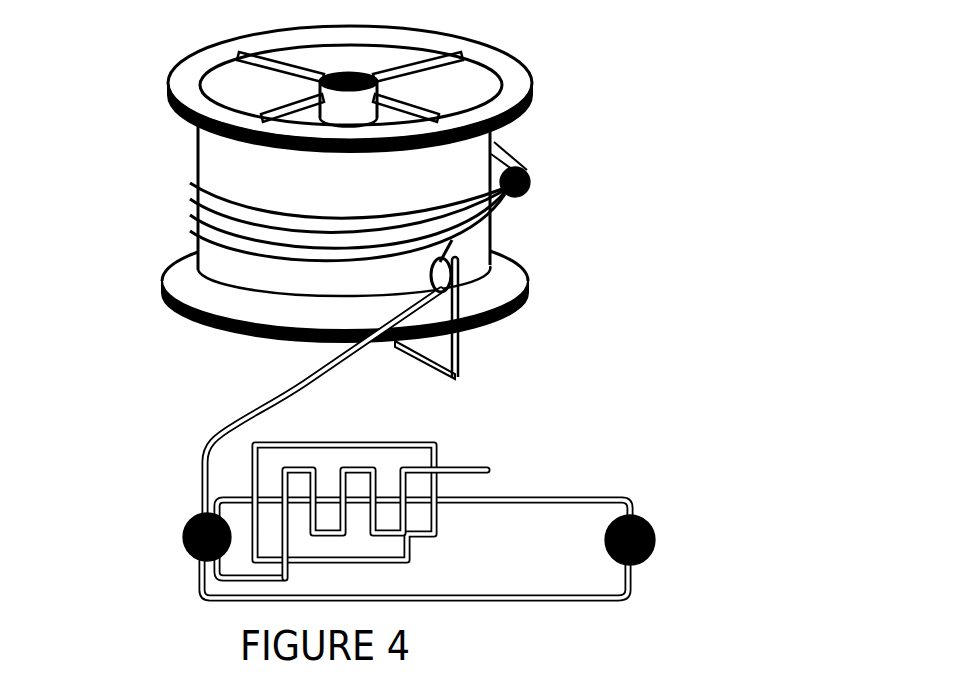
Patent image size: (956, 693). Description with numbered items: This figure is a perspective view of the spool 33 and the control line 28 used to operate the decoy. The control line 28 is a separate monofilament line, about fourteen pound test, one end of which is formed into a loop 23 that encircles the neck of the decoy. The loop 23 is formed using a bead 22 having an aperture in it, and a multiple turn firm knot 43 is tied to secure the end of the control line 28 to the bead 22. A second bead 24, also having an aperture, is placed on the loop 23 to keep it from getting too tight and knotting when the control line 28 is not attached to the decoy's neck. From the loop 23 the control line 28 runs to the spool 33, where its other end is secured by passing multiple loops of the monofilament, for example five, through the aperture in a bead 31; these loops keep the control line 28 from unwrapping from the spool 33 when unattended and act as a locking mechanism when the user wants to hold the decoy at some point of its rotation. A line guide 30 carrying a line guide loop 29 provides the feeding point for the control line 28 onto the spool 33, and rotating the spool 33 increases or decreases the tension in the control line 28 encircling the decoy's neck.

The spool 33 is at (530, 72).
The bead 31 is at (533, 180).
The line guide loop 29 is at (460, 273).
The line guide 30 is at (458, 345).
The control line 28 is at (297, 388).
The bead 22 is at (188, 525).
The second bead 24 is at (647, 513).
The loop 23 is at (563, 592).
The multiple turn firm knot 43 is at (410, 438).